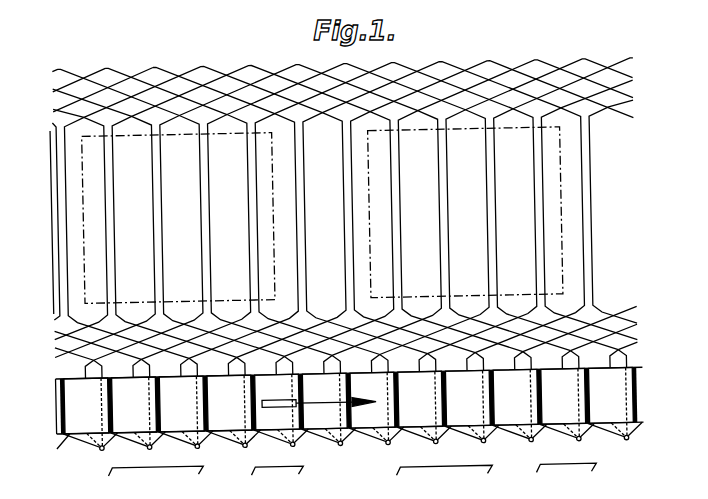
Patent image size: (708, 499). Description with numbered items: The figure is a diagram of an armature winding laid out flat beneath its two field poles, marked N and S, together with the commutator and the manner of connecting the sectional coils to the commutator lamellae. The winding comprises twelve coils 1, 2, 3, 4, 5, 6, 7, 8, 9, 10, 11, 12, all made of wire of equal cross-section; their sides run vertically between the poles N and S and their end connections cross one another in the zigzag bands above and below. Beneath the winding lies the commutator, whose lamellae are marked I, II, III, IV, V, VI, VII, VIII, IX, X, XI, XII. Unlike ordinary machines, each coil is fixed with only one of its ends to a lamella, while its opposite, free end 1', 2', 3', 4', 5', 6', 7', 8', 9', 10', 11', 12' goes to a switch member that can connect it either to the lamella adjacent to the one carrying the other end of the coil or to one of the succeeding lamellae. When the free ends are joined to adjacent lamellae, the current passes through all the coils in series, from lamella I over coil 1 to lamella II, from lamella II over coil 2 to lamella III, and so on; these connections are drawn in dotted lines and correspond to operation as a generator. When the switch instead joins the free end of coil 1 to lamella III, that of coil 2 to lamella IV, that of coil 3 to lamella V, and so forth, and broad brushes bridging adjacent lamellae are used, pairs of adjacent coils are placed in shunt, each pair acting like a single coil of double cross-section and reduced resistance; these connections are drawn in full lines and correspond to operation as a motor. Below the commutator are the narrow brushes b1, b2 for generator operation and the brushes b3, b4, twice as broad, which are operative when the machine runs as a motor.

The coil 1 is at (203, 203).
The coil 2 is at (251, 202).
The coil 3 is at (299, 201).
The coil 4 is at (346, 200).
The coil 5 is at (394, 199).
The coil 6 is at (442, 198).
The coil 7 is at (340, 200).
The coil 8 is at (343, 200).
The coil 9 is at (343, 200).
The coil 10 is at (348, 200).
The coil 11 is at (343, 200).
The coil 12 is at (343, 200).
The lamella I is at (179, 404).
The lamella II is at (227, 403).
The lamella III is at (275, 402).
The lamella IV is at (322, 401).
The lamella V is at (370, 400).
The lamella VI is at (418, 399).
The lamella VII is at (465, 398).
The lamella VIII is at (513, 397).
The lamella IX is at (561, 396).
The lamella X is at (609, 395).
The lamella XI is at (84, 406).
The lamella XII is at (132, 405).
The free end of coil 1' is at (233, 409).
The free end of coil 2' is at (280, 408).
The free end of coil 3' is at (328, 407).
The free end of coil 4' is at (376, 406).
The free end of coil 5' is at (423, 405).
The free end of coil 6' is at (471, 404).
The free end of coil 7' is at (519, 403).
The free end of coil 8' is at (566, 402).
The free end of coil 9' is at (614, 401).
The free end of coil 10' is at (90, 412).
The free end of coil 11' is at (137, 411).
The free end of coil 12' is at (185, 410).
The brush b1 is at (287, 474).
The brush b2 is at (576, 466).
The brush b3 is at (165, 474).
The brush b4 is at (454, 469).
The north pole N is at (178, 218).
The south pole S is at (465, 212).